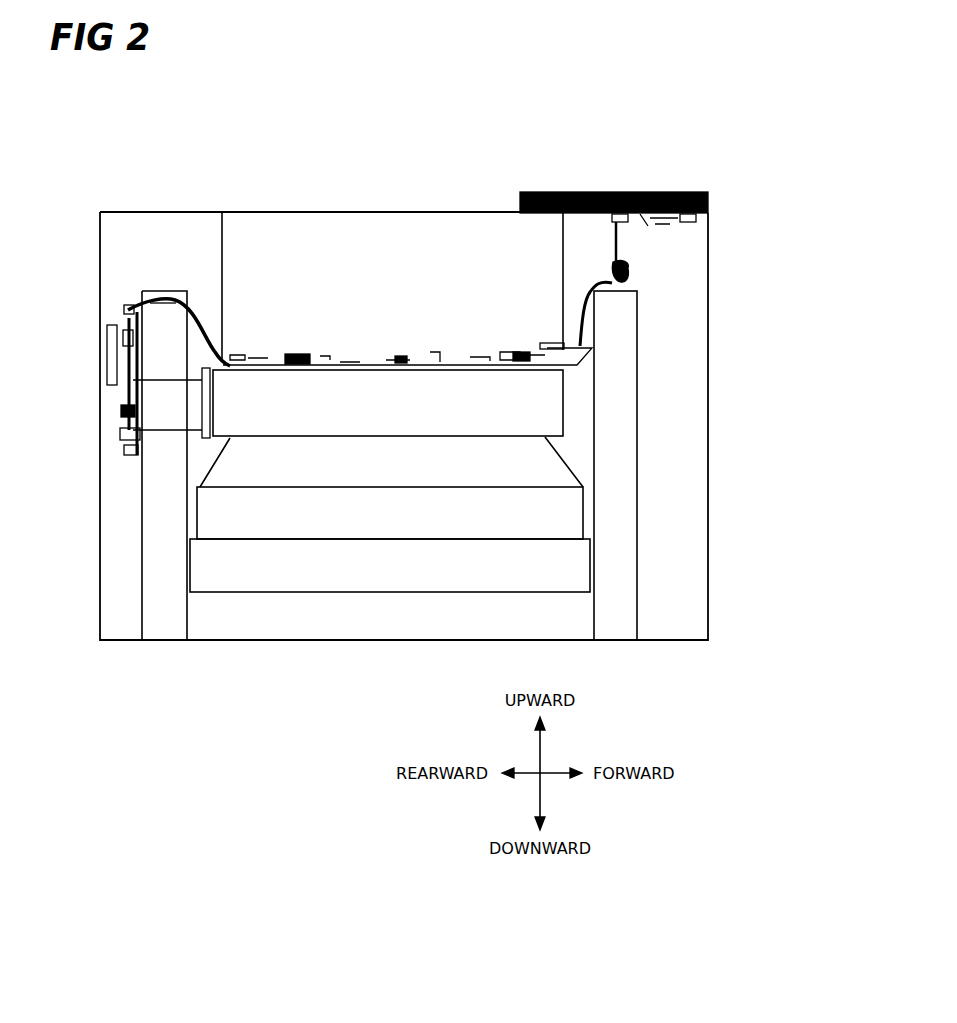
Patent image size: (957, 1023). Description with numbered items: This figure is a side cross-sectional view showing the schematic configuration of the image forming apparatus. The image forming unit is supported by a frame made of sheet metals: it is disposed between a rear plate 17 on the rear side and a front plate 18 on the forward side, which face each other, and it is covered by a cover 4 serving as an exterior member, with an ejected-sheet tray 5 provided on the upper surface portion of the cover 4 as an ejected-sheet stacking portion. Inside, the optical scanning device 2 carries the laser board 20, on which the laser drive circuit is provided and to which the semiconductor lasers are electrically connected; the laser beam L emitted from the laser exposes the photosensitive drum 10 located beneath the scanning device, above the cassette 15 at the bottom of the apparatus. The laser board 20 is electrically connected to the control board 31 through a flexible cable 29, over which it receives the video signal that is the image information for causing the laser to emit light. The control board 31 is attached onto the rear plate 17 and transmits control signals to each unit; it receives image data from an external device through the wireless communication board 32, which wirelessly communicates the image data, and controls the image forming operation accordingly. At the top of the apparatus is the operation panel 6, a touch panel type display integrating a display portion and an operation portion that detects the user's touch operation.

The optical scanning device 2 is at (565, 402).
The cover 4 is at (135, 212).
The ejected-sheet tray 5 is at (222, 250).
The operation panel 6 is at (627, 192).
The photosensitive drum 10 is at (582, 523).
The cassette 15 is at (590, 572).
The rear plate 17 is at (142, 575).
The front plate 18 is at (708, 500).
The laser board 20 is at (208, 378).
The flexible cable 29 is at (158, 380).
The control board 31 is at (128, 385).
The wireless communication board 32 is at (107, 345).
The laser beam L is at (568, 470).